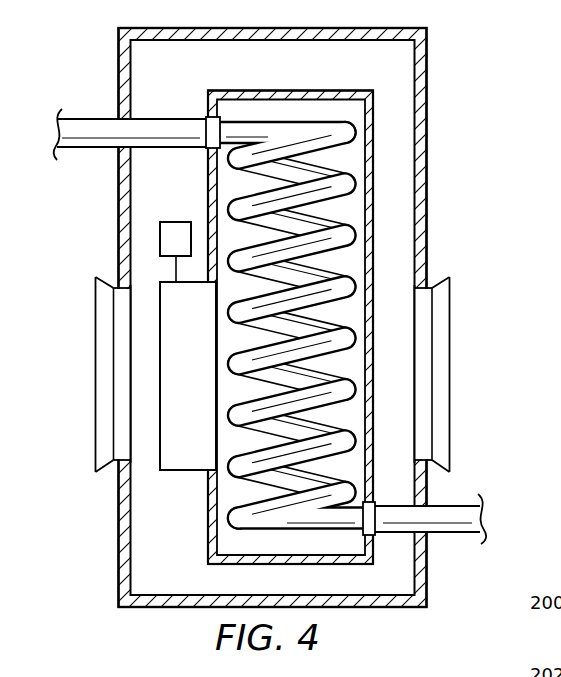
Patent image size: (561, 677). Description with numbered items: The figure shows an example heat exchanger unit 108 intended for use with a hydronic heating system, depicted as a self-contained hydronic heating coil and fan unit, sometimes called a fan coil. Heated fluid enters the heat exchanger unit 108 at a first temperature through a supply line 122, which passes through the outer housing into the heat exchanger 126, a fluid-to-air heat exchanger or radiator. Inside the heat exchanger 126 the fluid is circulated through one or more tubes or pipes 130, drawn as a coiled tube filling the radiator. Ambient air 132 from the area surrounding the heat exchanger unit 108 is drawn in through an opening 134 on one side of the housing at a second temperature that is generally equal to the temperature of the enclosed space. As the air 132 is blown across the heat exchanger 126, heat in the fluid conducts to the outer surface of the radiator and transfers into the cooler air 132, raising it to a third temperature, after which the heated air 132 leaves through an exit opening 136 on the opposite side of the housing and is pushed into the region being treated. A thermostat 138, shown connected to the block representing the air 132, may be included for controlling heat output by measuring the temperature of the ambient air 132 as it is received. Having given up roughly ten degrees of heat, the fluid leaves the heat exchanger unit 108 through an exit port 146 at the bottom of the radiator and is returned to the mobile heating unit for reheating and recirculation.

The heat exchanger unit 108 is at (479, 152).
The supply line 122 is at (90, 118).
The heat exchanger 126 is at (305, 90).
The tubes or pipes 130 is at (327, 217).
The ambient air 132 is at (183, 470).
The opening 134 is at (105, 383).
The exit opening 136 is at (437, 383).
The thermostat 138 is at (173, 222).
The exit port 146 is at (453, 533).